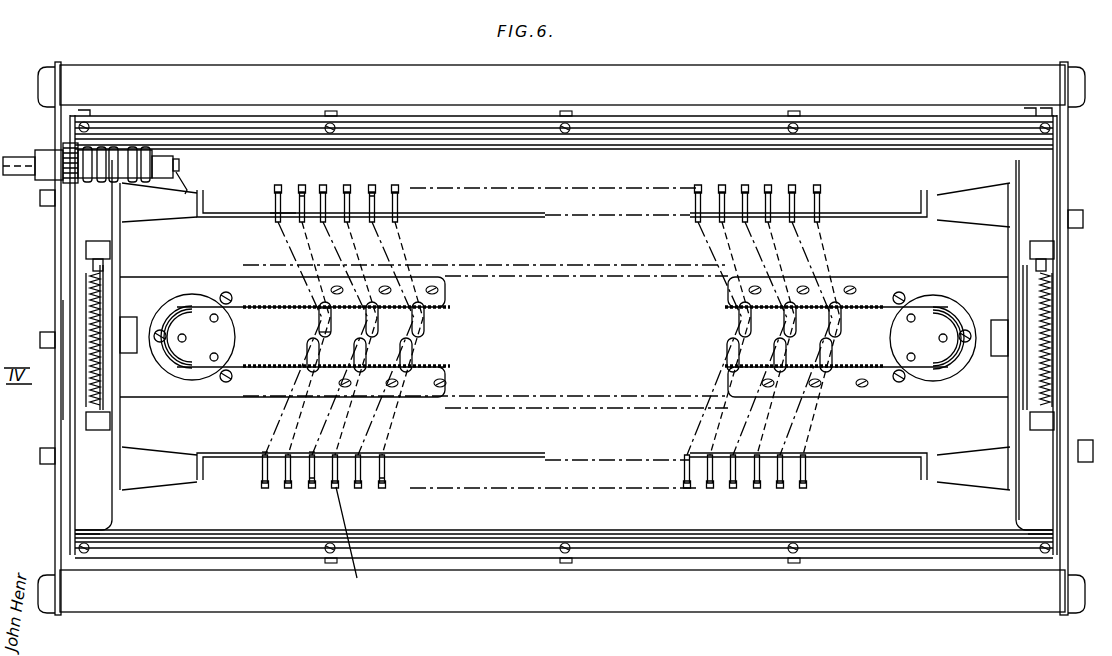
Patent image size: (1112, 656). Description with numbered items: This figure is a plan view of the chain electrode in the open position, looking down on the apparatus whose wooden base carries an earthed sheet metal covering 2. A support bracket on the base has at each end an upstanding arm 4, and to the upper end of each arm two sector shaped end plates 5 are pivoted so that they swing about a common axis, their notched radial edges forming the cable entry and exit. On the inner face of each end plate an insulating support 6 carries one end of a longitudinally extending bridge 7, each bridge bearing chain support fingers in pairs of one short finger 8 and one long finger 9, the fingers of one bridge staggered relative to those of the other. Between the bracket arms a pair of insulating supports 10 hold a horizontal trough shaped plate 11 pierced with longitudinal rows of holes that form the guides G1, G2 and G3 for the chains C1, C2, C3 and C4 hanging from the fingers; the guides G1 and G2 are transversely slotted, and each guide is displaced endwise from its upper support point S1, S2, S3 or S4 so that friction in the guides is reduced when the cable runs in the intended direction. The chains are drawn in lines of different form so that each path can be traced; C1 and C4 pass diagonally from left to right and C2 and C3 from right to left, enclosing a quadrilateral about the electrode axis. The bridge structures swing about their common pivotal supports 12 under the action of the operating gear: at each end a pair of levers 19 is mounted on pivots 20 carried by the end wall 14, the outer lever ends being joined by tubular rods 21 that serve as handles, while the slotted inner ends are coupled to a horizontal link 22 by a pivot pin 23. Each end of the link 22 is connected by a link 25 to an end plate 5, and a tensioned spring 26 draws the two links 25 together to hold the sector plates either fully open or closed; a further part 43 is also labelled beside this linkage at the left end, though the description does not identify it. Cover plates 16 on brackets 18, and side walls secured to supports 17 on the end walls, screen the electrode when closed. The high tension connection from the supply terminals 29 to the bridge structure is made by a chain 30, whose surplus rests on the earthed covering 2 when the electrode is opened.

The sheet metal covering 2 is at (637, 184).
The upstanding arm 4 is at (1025, 297).
The sector shaped end plate 5 is at (118, 214).
The insulating support 6 is at (162, 218).
The bridge 7 is at (221, 230).
The short finger 8 is at (301, 192).
The long finger 9 is at (275, 200).
The insulating support 10 is at (192, 302).
The trough shaped plate 11 is at (279, 299).
The pivotal support 12 is at (146, 355).
The end wall 14 is at (72, 266).
The cover plate 16 is at (492, 146).
The support 17 is at (97, 530).
The bracket 18 is at (558, 150).
The lever 19 is at (57, 133).
The pivot 20 is at (42, 200).
The tubular rod 21 is at (553, 98).
The horizontal link 22 is at (92, 386).
The pivot pin 23 is at (40, 340).
The link 25 is at (86, 247).
The tensioned spring 26 is at (98, 270).
The H. T. supply terminal 29 is at (180, 164).
The chain 30 is at (183, 189).
The plate 43 is at (101, 305).
The support point S1 is at (312, 410).
The support point S2 is at (280, 217).
The support point S3 is at (311, 488).
The support point S4 is at (302, 190).
The chain C1 is at (282, 430).
The chain C2 is at (296, 252).
The chain C3 is at (325, 412).
The chain C4 is at (340, 286).
The guide G1 is at (307, 352).
The guide G2 is at (319, 326).
The guide G3 is at (331, 308).